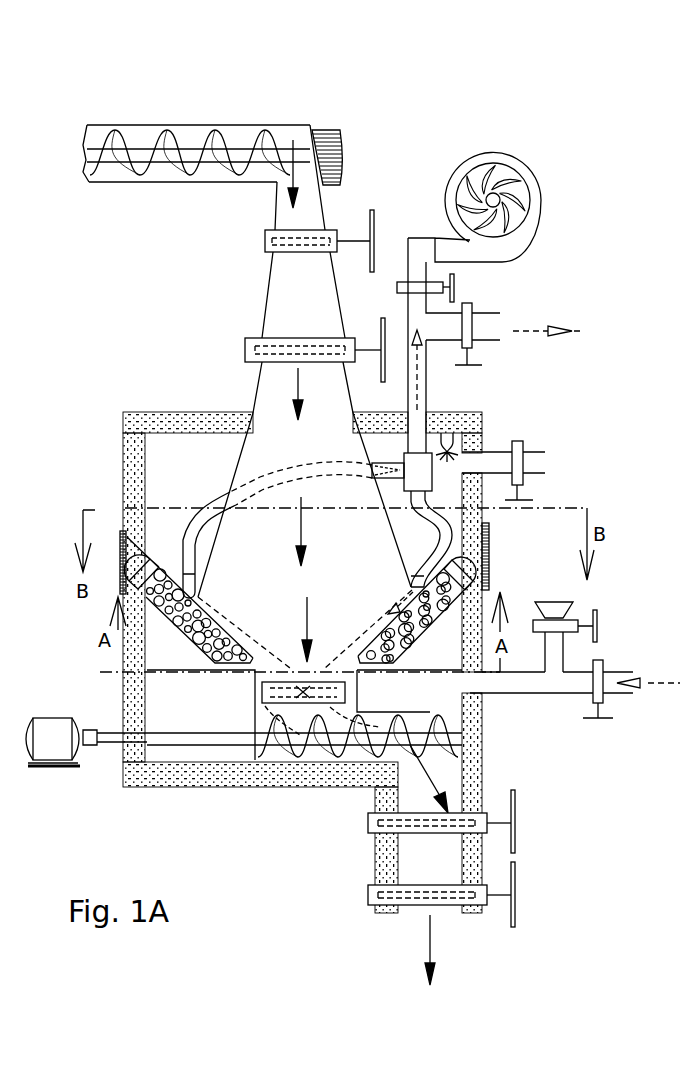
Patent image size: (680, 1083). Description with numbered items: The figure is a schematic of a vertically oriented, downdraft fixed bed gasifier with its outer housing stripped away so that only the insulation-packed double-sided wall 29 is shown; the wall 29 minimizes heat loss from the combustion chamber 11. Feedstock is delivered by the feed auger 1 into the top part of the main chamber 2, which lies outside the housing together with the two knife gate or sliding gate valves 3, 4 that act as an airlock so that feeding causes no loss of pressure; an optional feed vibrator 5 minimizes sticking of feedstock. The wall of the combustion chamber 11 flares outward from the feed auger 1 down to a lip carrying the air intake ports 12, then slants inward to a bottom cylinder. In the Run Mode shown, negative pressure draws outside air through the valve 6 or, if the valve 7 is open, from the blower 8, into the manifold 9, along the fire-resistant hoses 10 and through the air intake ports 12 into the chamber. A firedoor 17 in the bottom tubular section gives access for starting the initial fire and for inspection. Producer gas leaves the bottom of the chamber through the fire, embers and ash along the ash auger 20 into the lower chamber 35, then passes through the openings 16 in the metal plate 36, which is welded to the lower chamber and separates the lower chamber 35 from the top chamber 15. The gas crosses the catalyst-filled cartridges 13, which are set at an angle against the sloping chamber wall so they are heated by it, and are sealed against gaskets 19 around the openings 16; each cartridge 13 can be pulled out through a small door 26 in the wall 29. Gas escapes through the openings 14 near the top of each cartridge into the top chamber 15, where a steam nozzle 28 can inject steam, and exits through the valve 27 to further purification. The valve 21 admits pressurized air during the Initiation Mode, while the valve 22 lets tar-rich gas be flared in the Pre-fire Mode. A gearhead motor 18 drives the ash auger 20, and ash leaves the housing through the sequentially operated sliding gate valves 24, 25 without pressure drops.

The feed auger 1 is at (220, 125).
The top part of the main chamber 2 is at (280, 197).
The sliding gate valve 3 is at (332, 210).
The sliding gate valve 4 is at (345, 337).
The feed vibrator 5 is at (330, 132).
The valve 6 is at (468, 366).
The valve 7 is at (455, 282).
The blower 8 is at (535, 170).
The manifold 9 is at (408, 528).
The hoses 10 is at (283, 474).
The combustion chamber 11 is at (304, 537).
The air intake ports 12 is at (200, 597).
The catalyst cartridges 13 is at (186, 637).
The openings 14 is at (157, 575).
The top chamber 15 is at (186, 468).
The openings 16 is at (385, 660).
The firedoor 17 is at (345, 686).
The gearhead motor 18 is at (38, 720).
The gaskets 19 is at (248, 670).
The ash auger 20 is at (262, 790).
The valve 21 is at (605, 666).
The valve 22 is at (597, 617).
The sliding gate valve 24 is at (515, 787).
The sliding gate valve 25 is at (518, 872).
The door 26 is at (490, 540).
The valve 27 is at (523, 441).
The steam nozzle 28 is at (462, 425).
The wall 29 is at (140, 417).
The lower chamber 35 is at (201, 715).
The metal plate 36 is at (425, 655).